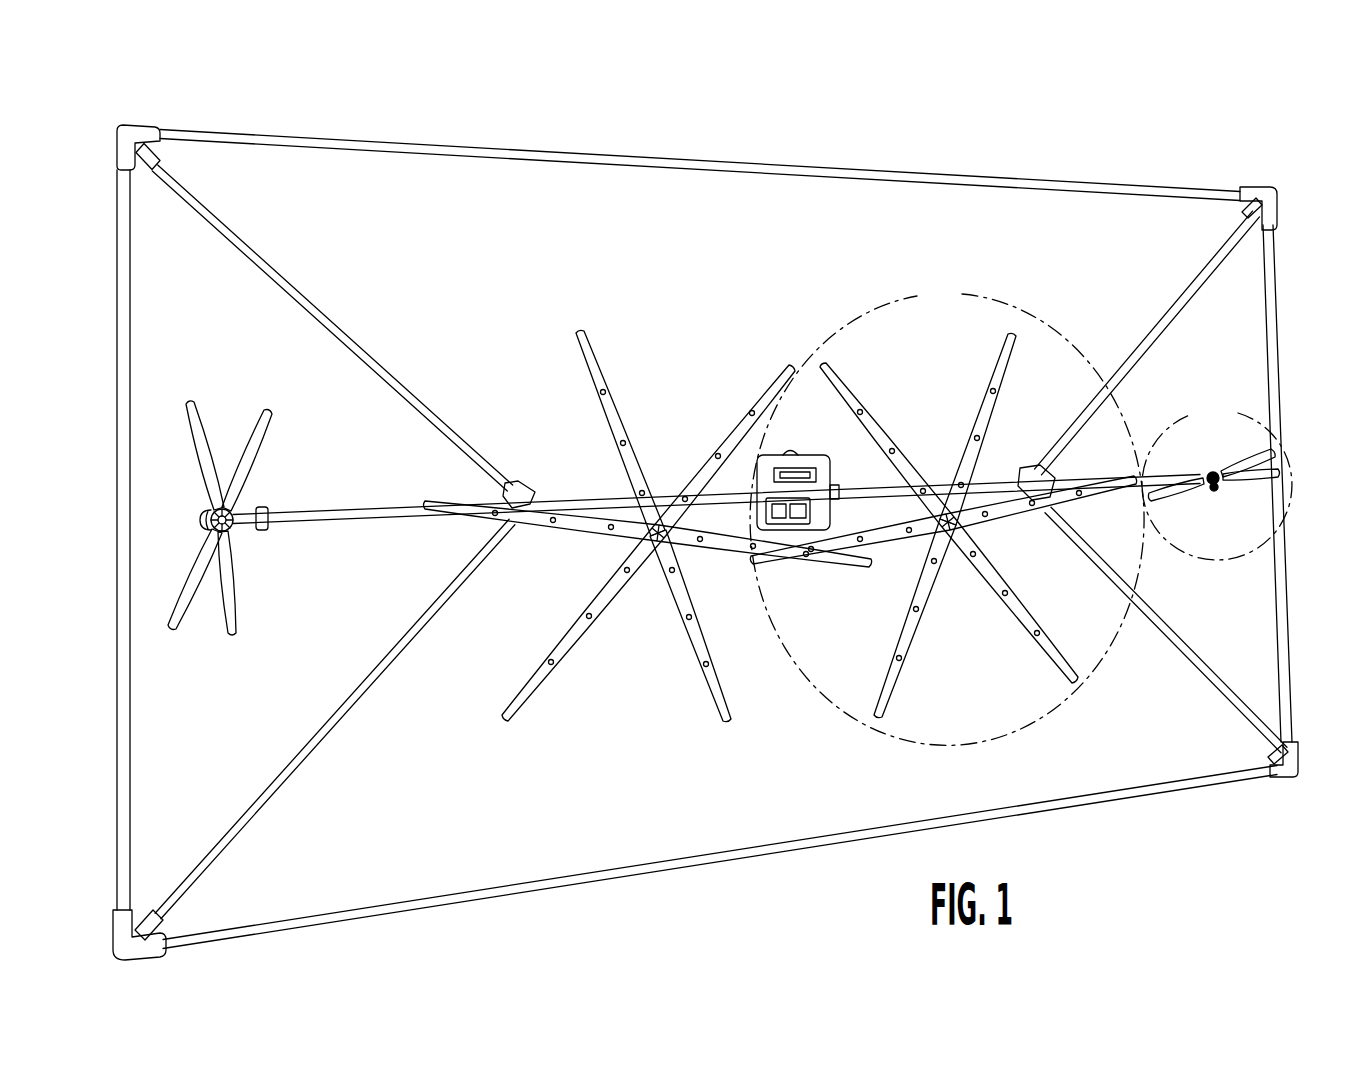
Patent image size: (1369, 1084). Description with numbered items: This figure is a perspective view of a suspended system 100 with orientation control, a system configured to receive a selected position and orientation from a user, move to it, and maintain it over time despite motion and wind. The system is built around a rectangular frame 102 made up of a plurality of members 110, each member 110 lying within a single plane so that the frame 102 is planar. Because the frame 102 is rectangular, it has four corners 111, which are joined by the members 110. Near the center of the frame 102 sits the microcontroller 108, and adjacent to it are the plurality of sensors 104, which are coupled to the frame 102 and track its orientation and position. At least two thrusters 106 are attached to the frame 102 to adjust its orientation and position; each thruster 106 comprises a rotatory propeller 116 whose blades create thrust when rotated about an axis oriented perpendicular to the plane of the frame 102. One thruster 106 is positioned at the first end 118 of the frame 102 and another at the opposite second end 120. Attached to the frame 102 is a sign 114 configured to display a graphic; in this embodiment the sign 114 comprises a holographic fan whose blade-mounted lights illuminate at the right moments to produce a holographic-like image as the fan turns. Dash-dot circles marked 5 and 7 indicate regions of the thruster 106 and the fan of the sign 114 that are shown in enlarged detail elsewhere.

The suspended system 100 is at (212, 82).
The frame 102 is at (797, 155).
The plurality of sensors 104 is at (780, 621).
The thrusters 106 is at (232, 537).
The microcontroller 108 is at (792, 490).
The members 110 is at (308, 510).
The corners 111 is at (118, 143).
The sign 114 is at (880, 708).
The rotatory propeller 116 is at (250, 442).
The first end 118 is at (120, 530).
The second end 120 is at (1293, 612).
The detail view 5 indicator 5 is at (1247, 412).
The detail view 7 indicator 7 is at (970, 291).